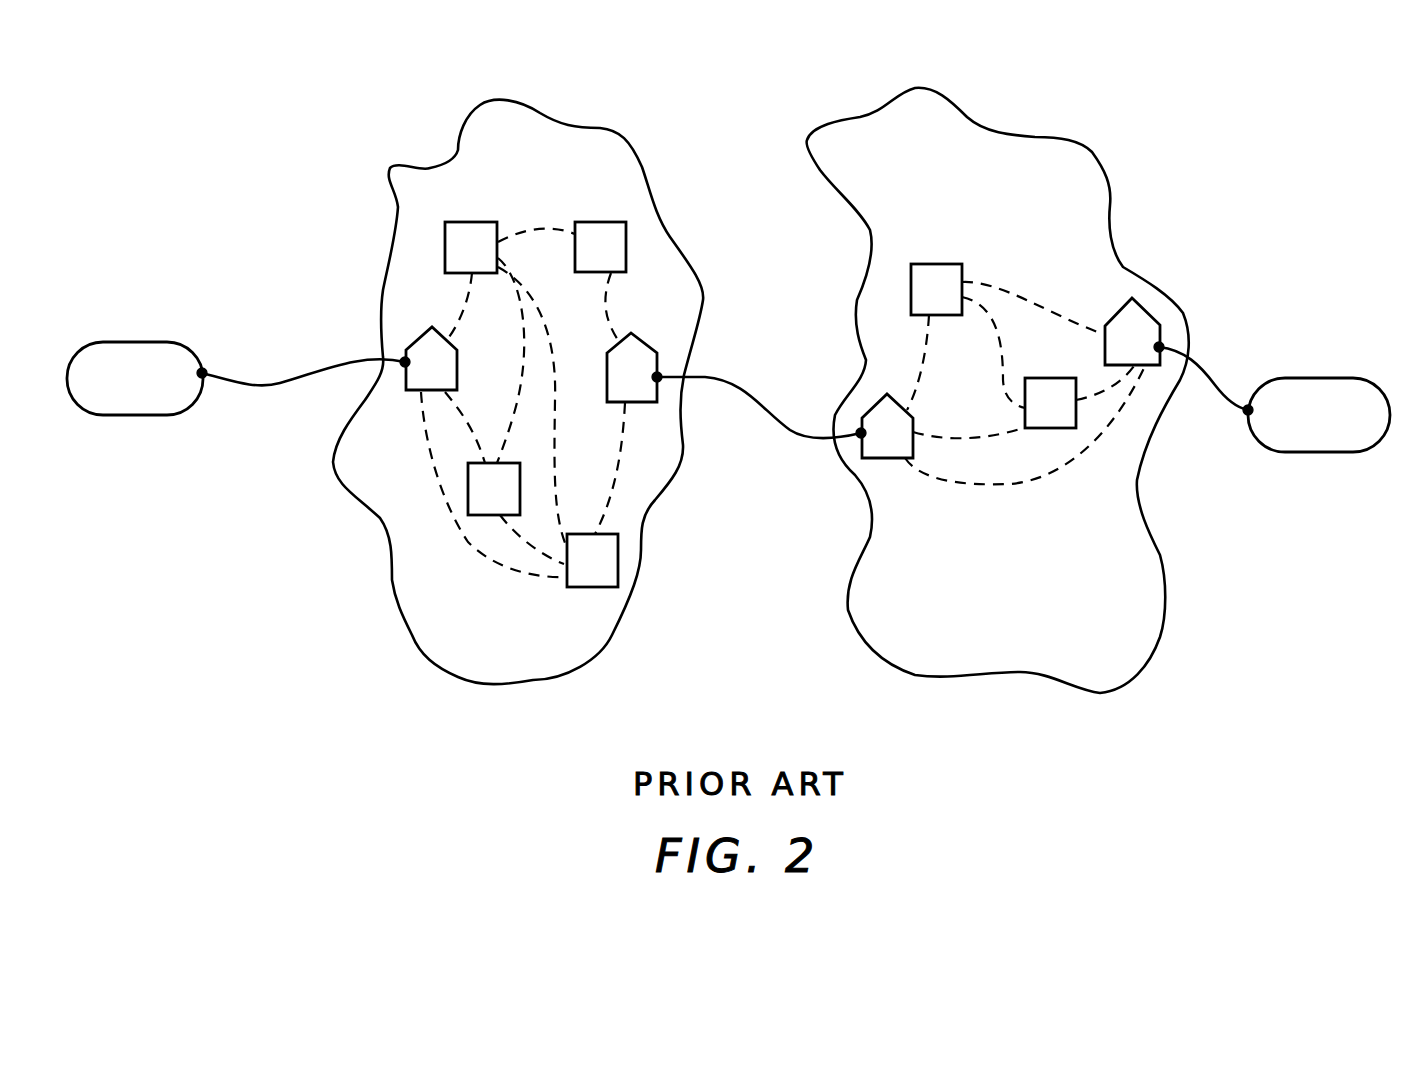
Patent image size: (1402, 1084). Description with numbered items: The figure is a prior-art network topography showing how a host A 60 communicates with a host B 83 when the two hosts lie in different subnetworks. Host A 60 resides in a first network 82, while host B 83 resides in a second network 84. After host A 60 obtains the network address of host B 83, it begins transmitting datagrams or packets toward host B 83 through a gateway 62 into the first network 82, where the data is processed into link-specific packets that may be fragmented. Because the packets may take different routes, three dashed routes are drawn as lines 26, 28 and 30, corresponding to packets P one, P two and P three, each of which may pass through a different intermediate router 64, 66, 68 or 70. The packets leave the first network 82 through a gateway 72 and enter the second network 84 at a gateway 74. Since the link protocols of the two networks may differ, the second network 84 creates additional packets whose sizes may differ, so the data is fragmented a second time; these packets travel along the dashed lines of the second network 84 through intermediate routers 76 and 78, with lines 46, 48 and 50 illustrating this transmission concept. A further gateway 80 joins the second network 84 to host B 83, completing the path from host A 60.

The line 26 is at (470, 423).
The line 28 is at (462, 313).
The line 30 is at (452, 516).
The line 46 is at (928, 350).
The line 48 is at (986, 437).
The line 50 is at (1041, 484).
The host A 60 is at (157, 415).
The gateway 62 is at (490, 355).
The intermediate router 64 is at (495, 190).
The intermediate router 66 is at (600, 222).
The intermediate router 68 is at (492, 463).
The intermediate router 70 is at (577, 534).
The gateway 72 is at (672, 320).
The gateway 74 is at (910, 414).
The intermediate router 76 is at (935, 264).
The intermediate router 78 is at (1060, 378).
The gateway 80 is at (1150, 318).
The network 1 82 is at (504, 75).
The host B 83 is at (1333, 352).
The network 2 84 is at (939, 76).